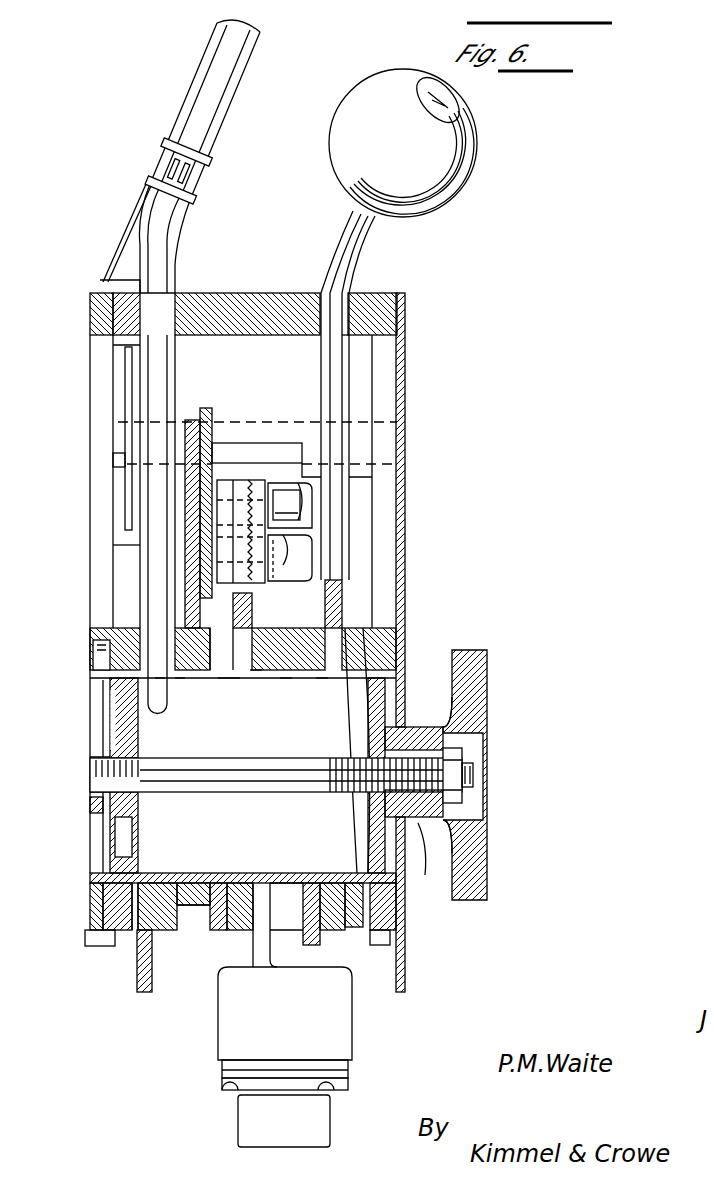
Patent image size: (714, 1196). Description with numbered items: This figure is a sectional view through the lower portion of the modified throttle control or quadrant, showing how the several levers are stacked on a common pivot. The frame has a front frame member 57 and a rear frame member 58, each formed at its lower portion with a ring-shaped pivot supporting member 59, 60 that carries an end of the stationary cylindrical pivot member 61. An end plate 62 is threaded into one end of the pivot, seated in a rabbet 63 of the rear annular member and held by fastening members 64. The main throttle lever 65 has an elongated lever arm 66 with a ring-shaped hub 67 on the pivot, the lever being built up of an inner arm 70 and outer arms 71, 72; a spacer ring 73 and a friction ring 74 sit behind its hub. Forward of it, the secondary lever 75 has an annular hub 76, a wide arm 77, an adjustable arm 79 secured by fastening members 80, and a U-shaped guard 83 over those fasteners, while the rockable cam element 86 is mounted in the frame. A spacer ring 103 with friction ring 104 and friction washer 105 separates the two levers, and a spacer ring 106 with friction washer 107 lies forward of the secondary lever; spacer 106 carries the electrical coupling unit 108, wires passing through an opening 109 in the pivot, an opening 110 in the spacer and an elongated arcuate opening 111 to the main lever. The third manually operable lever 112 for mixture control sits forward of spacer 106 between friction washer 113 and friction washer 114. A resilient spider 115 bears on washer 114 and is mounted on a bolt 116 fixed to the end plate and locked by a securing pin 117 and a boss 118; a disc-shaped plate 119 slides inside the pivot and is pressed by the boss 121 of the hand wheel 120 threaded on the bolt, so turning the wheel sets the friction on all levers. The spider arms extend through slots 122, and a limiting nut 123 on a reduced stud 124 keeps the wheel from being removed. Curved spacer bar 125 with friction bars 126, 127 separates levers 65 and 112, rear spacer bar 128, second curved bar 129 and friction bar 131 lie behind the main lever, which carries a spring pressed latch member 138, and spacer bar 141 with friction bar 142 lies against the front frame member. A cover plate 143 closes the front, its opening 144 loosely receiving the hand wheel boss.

The front frame member 57 is at (397, 309).
The rear frame member 58 is at (100, 333).
The ring-shaped pivot supporting member 59 is at (397, 920).
The ring-shaped pivot supporting member 60 is at (93, 928).
The stationary cylindrical pivot member 61 is at (207, 874).
The end plate 62 is at (137, 830).
The rabbet 63 is at (93, 900).
The fastening members 64 is at (93, 650).
The main throttle lever 65 is at (178, 248).
The lever arm 66 is at (208, 98).
The ring-shaped hub 67 is at (148, 613).
The inner arm 70 is at (152, 542).
The outer arm 71 is at (143, 383).
The outer arm 72 is at (172, 381).
The spacer ring 73 is at (118, 935).
The friction ring 74 is at (132, 937).
The secondary lever 75 is at (260, 616).
The annular hub 76 is at (251, 876).
The arm 77 is at (242, 483).
The adjustable arm 79 is at (268, 482).
The fastening members 80 is at (300, 510).
The U-shaped guard 83 is at (310, 553).
The rockable cam element 86 is at (192, 420).
The spacer ring 103 is at (222, 700).
The friction ring 104 is at (178, 684).
The friction washer 105 is at (233, 683).
The spacer ring 106 is at (285, 685).
The friction washer 107 is at (255, 672).
The electrical coupling unit 108 is at (233, 1030).
The opening 109 is at (285, 868).
The opening 110 is at (258, 933).
The elongated arcuate opening 111 is at (160, 700).
The third manually operable lever 112 is at (356, 569).
The friction washer 113 is at (322, 680).
The friction washer 114 is at (345, 623).
The resilient spider 115 is at (360, 723).
The bolt 116 is at (262, 792).
The securing pin 117 is at (107, 718).
The boss 118 is at (90, 803).
The disc-shaped plate 119 is at (398, 685).
The hand wheel 120 is at (484, 682).
The boss 121 is at (418, 825).
The slots 122 is at (320, 878).
The limiting nut 123 is at (463, 797).
The reduced stud 124 is at (473, 768).
The spacer bar 125 is at (270, 293).
The friction bar 126 is at (178, 287).
The friction bar 127 is at (318, 293).
The rear spacer bar 128 is at (100, 304).
The second longitudinally curved bar 129 is at (125, 348).
The friction bar 131 is at (135, 280).
The spring pressed latch member 138 is at (140, 193).
The spacer bar 141 is at (367, 290).
The friction bar 142 is at (350, 290).
The cover plate 143 is at (404, 413).
The opening 144 is at (410, 723).